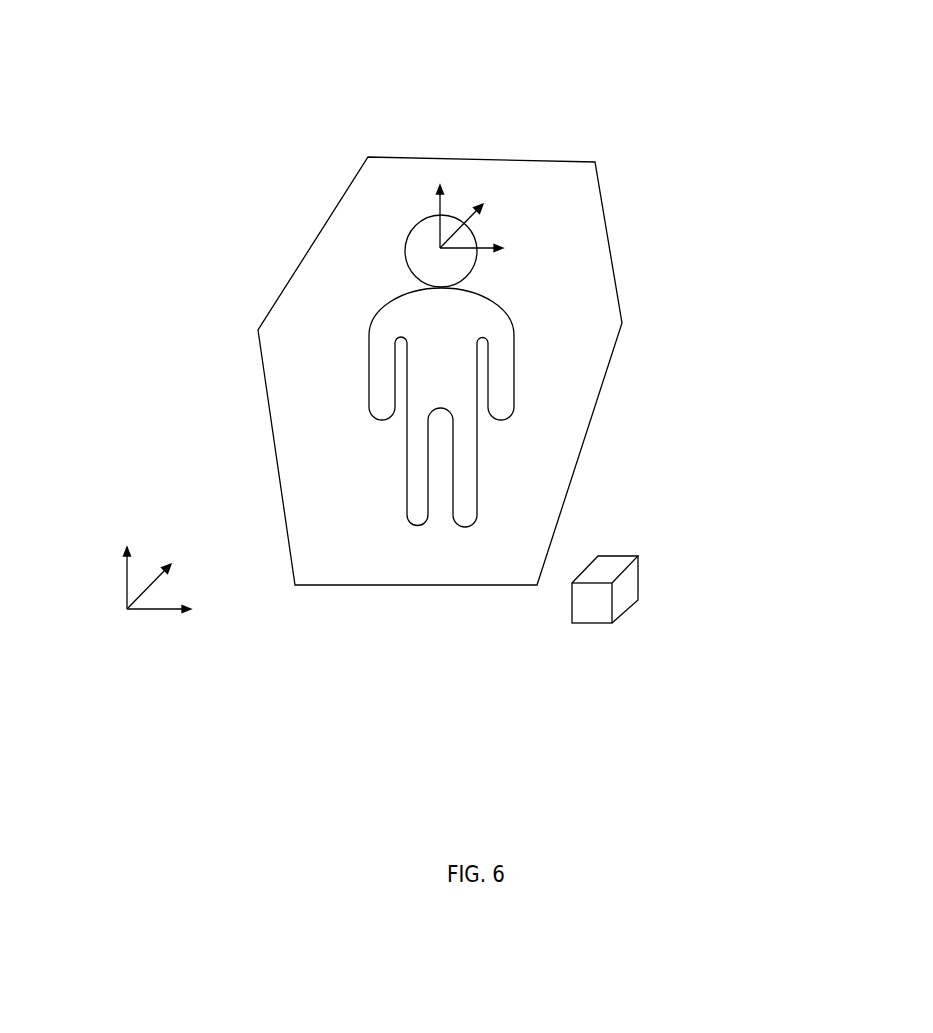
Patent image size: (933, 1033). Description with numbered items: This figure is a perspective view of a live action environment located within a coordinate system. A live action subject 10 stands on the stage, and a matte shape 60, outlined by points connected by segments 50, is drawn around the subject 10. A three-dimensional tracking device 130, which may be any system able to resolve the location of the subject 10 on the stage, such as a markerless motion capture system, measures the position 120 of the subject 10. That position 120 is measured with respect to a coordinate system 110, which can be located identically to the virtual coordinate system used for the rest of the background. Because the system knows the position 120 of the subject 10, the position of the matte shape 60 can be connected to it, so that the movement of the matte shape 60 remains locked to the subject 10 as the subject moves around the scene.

The live action subject 10 is at (477, 292).
The segments 50 is at (605, 375).
The matte shape 60 is at (398, 182).
The coordinate system 110 is at (155, 610).
The position 120 is at (440, 205).
The 3D tracking device 130 is at (625, 612).